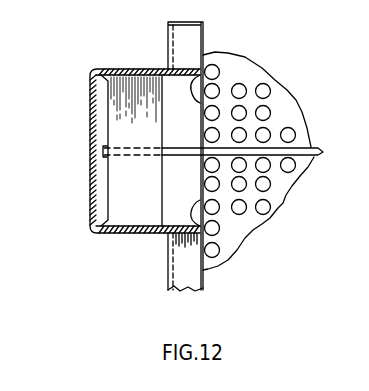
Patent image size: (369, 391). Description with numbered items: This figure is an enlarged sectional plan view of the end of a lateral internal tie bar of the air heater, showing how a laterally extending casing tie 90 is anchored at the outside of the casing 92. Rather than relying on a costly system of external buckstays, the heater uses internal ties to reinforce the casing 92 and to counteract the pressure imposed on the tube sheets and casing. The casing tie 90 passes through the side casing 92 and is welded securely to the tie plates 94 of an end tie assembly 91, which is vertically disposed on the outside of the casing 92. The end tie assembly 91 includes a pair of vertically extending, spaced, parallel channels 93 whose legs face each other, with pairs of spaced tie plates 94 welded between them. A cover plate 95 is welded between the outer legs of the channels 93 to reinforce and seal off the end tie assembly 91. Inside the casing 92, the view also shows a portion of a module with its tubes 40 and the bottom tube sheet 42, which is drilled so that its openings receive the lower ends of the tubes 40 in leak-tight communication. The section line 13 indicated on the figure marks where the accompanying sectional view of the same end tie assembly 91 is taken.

The end tie assembly 91 is at (81, 74).
The channels 93 is at (147, 69).
The tie plates 94 is at (137, 98).
The cover plate 95 is at (90, 118).
The tubes 40 is at (239, 87).
The bottom tube sheet 42 is at (277, 107).
The casing ties 90 is at (305, 147).
The casing 92 is at (203, 270).
The section line 13- 13 is at (62, 195).